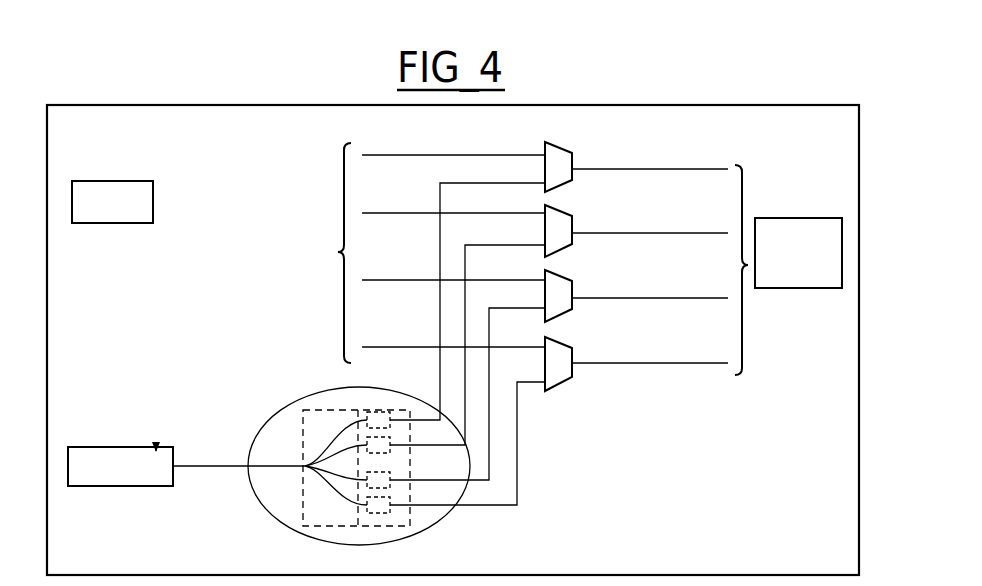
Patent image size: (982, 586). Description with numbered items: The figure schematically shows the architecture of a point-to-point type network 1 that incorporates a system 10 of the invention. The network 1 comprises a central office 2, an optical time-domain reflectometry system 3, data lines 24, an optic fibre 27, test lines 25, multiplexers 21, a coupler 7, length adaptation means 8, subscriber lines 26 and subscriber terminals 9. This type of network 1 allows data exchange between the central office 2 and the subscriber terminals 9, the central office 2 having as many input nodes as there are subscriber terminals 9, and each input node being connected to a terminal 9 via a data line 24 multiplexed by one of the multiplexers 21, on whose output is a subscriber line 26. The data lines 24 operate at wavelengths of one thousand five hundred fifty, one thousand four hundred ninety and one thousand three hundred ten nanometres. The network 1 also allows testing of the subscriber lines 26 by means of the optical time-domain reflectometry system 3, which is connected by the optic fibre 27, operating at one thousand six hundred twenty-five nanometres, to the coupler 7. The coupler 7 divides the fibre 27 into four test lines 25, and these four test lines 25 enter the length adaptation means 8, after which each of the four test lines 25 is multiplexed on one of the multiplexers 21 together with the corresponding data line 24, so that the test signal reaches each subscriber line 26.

The point-to-point architecture 1 is at (170, 103).
The central office 2 is at (107, 180).
The optical time-domain reflectometry system 3 is at (107, 488).
The coupler 7 is at (345, 529).
The length adaptation means 8 is at (388, 528).
The subscriber terminals 9 is at (793, 216).
The system 10 is at (255, 500).
The multiplexers 21 is at (564, 147).
The data lines 24 is at (418, 153).
The test lines 25 is at (526, 428).
The subscriber lines 26 is at (674, 367).
The optic fibre 27 is at (184, 461).